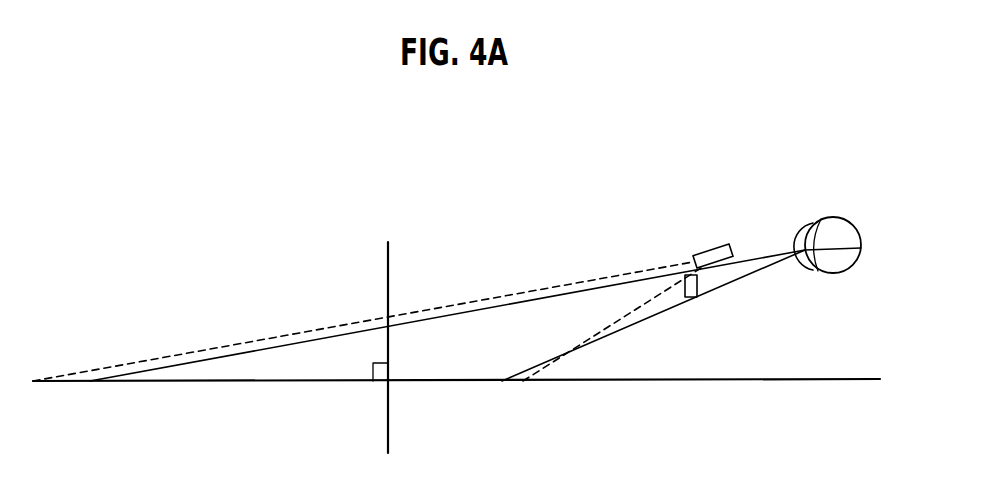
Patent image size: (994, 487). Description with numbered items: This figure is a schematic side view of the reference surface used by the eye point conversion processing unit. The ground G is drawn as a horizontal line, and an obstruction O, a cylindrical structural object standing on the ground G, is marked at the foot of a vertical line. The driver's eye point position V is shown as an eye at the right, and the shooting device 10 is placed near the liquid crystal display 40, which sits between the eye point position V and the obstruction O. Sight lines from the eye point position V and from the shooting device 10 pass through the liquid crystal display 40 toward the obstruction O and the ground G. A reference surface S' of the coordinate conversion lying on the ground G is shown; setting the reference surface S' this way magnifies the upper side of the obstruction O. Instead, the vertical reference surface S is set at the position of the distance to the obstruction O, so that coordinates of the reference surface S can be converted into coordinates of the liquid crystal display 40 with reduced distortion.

The shooting device 10 is at (703, 250).
The liquid crystal display 40 is at (697, 285).
The eye point position V is at (817, 217).
The vertical reference surface S is at (408, 321).
The reference surface S' is at (646, 342).
The obstruction O is at (392, 378).
The ground G is at (692, 379).